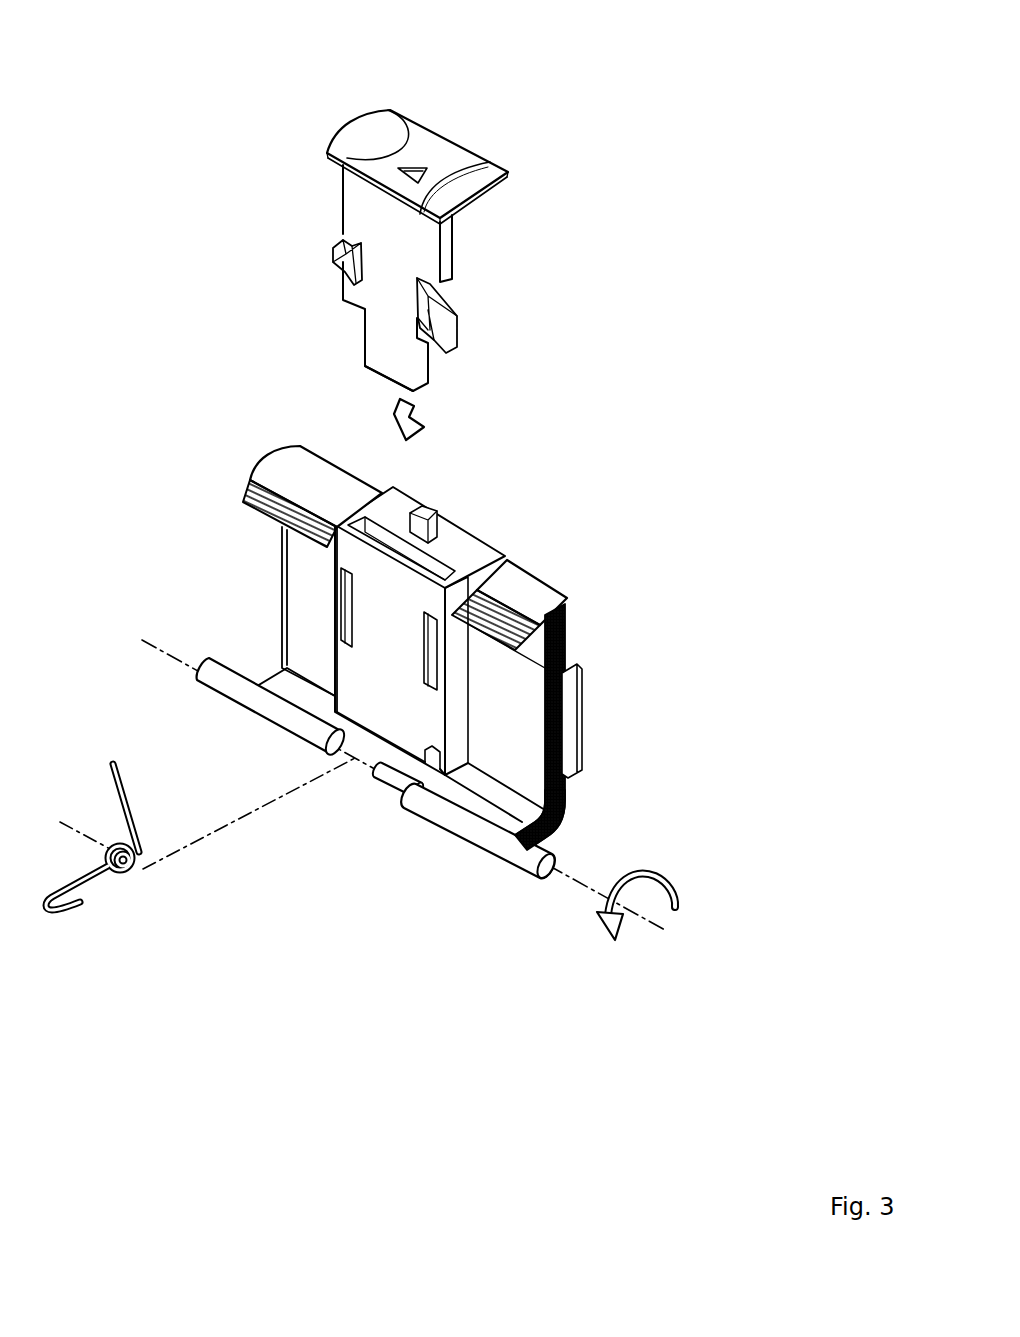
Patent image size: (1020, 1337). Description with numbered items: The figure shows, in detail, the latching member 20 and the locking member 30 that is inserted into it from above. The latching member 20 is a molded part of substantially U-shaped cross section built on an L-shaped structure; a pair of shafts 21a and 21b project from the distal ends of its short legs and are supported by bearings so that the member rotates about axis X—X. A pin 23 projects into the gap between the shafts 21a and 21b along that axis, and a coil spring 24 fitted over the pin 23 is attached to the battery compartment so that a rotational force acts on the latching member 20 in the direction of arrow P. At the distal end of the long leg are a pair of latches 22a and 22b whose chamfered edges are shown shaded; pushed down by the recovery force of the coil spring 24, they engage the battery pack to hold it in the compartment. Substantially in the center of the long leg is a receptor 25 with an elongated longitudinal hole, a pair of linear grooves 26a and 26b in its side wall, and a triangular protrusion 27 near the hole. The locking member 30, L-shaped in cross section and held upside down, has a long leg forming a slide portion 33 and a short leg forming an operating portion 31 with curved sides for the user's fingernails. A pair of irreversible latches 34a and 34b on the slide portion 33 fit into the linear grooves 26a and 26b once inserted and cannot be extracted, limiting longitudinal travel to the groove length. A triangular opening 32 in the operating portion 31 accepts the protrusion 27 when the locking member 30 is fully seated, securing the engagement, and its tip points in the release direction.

The latching member 20 is at (606, 739).
The shaft 21a is at (528, 860).
The shaft 21b is at (210, 677).
The latch 22a is at (512, 610).
The latch 22b is at (262, 480).
The pin 23 is at (396, 798).
The coil spring 24 is at (127, 880).
The receptor 25 is at (423, 562).
The linear groove 26a is at (474, 666).
The linear groove 26b is at (342, 605).
The protrusion 27 is at (430, 510).
The locking member 30 is at (293, 277).
The operating portion 31 is at (508, 172).
The opening 32 is at (419, 166).
The slide portion 33 is at (400, 320).
The irreversible latch 34a is at (447, 306).
The irreversible latch 34b is at (339, 247).